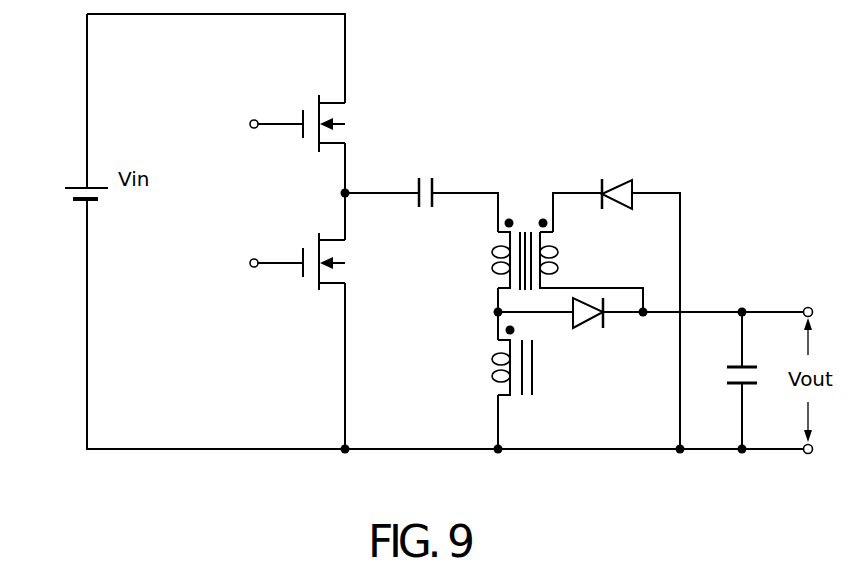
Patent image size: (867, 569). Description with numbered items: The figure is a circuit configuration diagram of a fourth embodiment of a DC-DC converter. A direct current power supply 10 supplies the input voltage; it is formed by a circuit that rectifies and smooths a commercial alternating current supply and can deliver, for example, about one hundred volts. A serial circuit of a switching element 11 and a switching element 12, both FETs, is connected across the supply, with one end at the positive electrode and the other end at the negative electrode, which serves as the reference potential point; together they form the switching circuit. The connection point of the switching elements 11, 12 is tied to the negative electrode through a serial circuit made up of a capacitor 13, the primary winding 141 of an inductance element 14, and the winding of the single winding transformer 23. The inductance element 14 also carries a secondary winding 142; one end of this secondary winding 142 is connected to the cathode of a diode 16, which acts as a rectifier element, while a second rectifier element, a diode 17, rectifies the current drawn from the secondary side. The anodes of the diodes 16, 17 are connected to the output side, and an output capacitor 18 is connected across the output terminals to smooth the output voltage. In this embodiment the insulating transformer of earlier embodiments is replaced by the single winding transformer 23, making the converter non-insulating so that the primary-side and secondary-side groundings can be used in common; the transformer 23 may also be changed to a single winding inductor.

The direct current power supply 10 is at (69, 192).
The switching element 11 is at (304, 146).
The switching element 12 is at (303, 285).
The capacitor 13 is at (430, 175).
The inductance element 14 is at (532, 234).
The primary winding 141 is at (490, 259).
The secondary winding 142 is at (558, 259).
The diode 16 is at (616, 179).
The diode 17 is at (591, 331).
The output capacitor 18 is at (758, 372).
The single winding transformer 23 is at (488, 369).